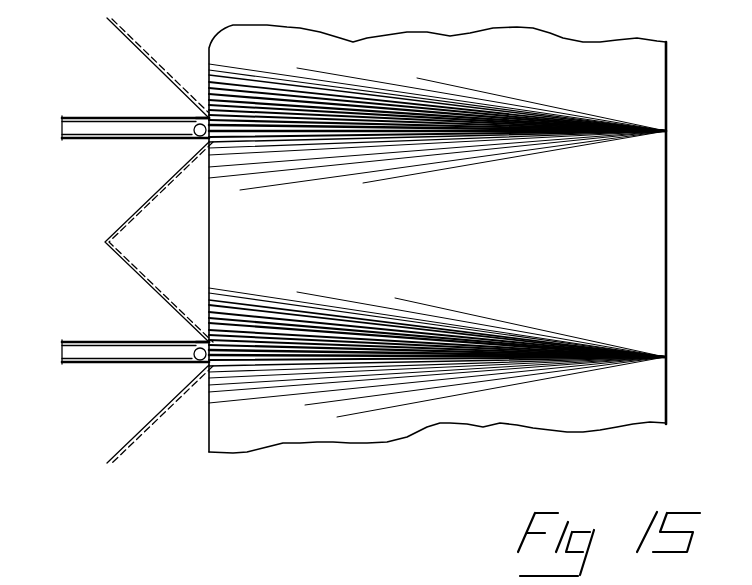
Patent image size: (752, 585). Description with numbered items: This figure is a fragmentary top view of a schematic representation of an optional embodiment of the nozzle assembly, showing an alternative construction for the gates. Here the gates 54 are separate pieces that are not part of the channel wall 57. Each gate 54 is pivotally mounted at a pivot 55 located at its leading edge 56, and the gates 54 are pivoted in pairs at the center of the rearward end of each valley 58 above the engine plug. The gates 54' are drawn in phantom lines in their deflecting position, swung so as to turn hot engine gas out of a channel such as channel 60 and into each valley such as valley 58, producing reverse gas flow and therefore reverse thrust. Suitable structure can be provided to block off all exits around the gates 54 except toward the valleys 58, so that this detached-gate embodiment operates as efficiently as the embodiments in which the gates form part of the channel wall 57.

The gates 54 is at (115, 242).
The gates in deflecting position 54' is at (154, 241).
The pivot 55 is at (197, 140).
The leading edges 56 is at (206, 120).
The channel wall 57 is at (276, 170).
The valley 58 is at (455, 150).
The channel 60 is at (545, 65).